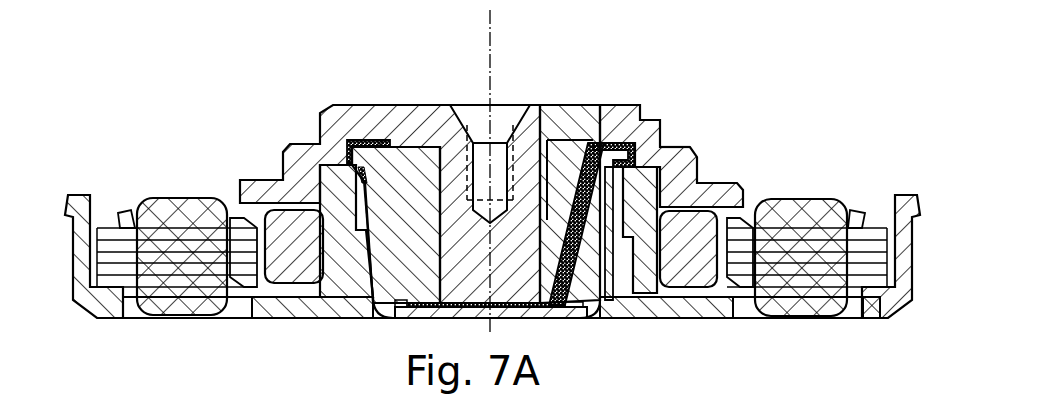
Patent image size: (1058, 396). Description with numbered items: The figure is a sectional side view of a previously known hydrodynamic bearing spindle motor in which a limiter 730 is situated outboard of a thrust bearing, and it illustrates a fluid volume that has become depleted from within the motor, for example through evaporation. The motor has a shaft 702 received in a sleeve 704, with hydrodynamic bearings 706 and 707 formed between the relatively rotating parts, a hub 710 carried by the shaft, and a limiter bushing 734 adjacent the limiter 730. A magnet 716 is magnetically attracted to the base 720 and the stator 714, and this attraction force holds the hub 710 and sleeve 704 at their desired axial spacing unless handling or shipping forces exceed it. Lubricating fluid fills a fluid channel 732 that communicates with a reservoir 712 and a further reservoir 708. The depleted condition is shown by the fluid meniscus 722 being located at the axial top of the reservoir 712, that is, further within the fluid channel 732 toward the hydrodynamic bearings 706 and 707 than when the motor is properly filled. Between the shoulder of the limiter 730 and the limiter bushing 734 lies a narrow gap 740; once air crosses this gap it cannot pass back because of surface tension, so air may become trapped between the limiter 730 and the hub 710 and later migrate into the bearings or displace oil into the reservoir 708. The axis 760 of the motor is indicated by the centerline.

The shaft 702 is at (452, 162).
The sleeve 704 is at (378, 140).
The hydrodynamic bearing 706 is at (398, 160).
The hydrodynamic bearing 707 is at (546, 150).
The reservoir 708 is at (586, 160).
The hub 710 is at (687, 183).
The reservoir 712 is at (662, 312).
The stator 714 is at (167, 267).
The magnet 716 is at (290, 267).
The base 720 is at (228, 313).
The fluid meniscus 722 is at (613, 170).
The limiter 730 is at (618, 142).
The fluid channel 732 is at (630, 165).
The limiter bushing 734 is at (655, 170).
The narrow gap 740 is at (692, 155).
The central axis 760 is at (489, 66).